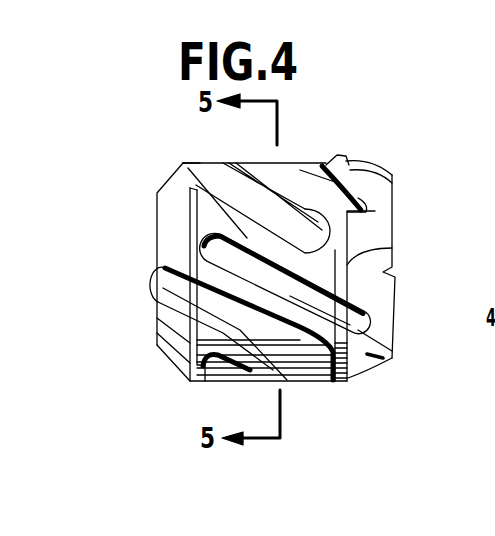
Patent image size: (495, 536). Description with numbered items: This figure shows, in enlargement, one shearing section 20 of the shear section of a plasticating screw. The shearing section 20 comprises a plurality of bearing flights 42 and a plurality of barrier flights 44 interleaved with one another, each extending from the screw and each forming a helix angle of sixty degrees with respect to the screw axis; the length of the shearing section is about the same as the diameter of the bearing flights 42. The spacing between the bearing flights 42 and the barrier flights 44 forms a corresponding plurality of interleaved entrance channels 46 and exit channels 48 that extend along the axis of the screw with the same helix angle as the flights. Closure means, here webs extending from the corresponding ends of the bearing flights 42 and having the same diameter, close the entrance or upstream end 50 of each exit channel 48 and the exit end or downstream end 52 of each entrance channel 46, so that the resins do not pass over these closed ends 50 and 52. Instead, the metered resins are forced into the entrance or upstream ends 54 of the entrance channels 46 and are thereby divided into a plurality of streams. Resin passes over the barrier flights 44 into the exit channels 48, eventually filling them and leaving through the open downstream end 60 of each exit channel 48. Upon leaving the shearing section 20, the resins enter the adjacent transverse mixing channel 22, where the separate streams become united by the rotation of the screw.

The shearing section 20 is at (129, 148).
The transverse mixing channel 22 is at (367, 345).
The bearing flights 42 is at (263, 160).
The barrier flights 44 is at (190, 193).
The entrance channels 46 is at (208, 172).
The exit channels 48 is at (303, 172).
The entrance or upstream end of exit channel 50 is at (183, 165).
The exit end or downstream end of entrance channel 52 is at (341, 160).
The entrance or upstream ends of entrance channels 54 is at (150, 278).
The open downstream end of exit channel 60 is at (375, 211).